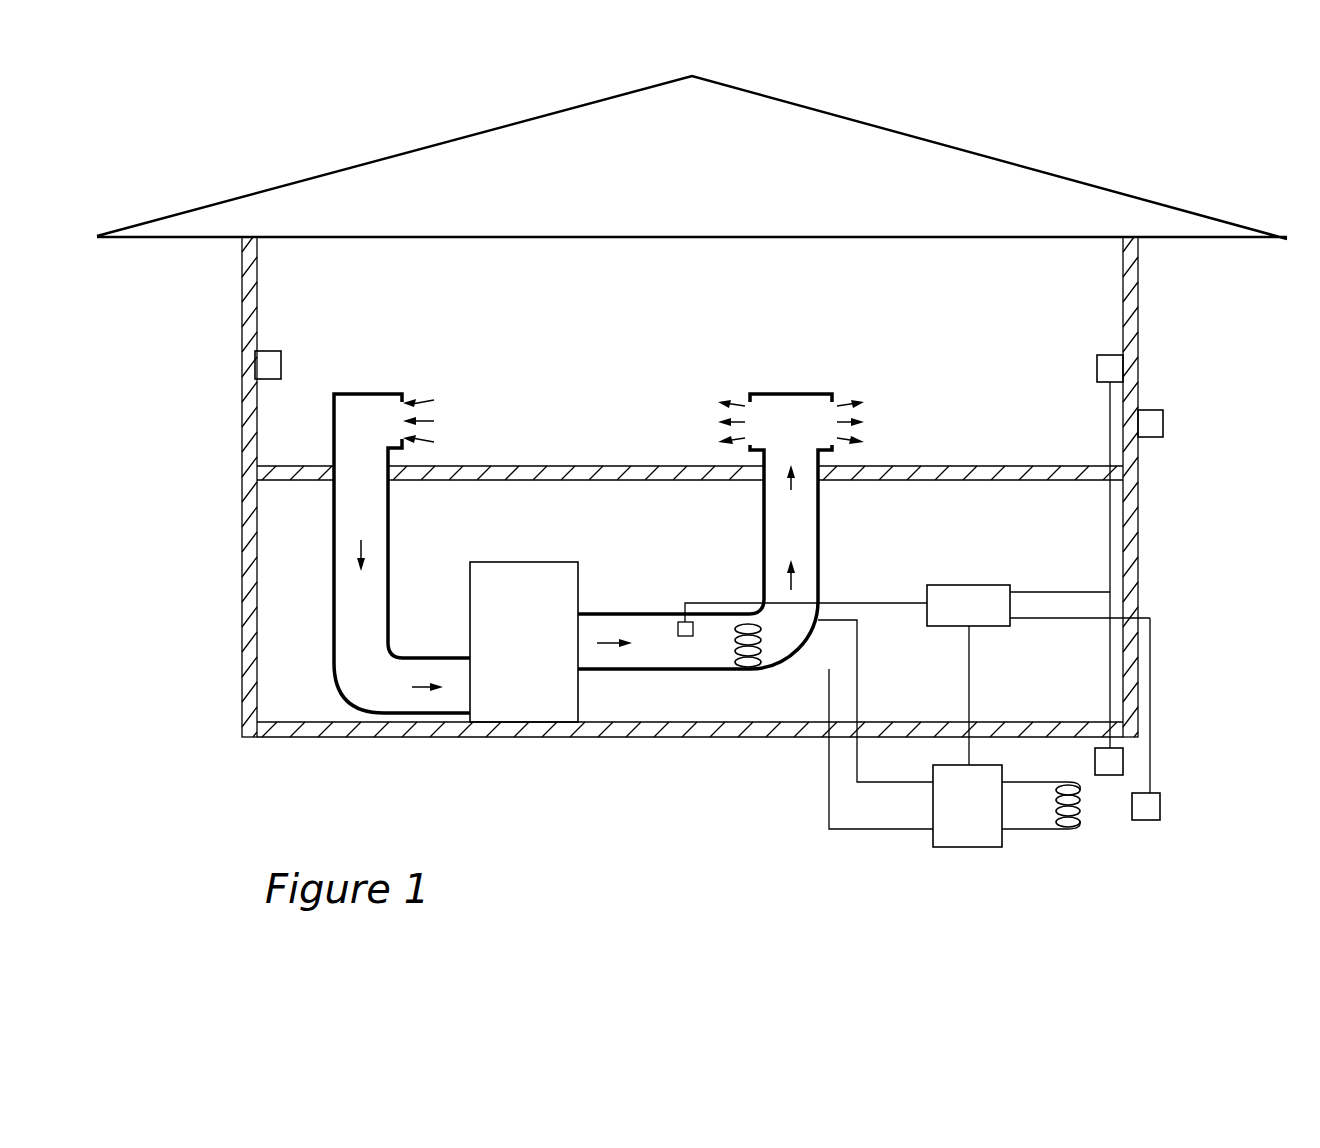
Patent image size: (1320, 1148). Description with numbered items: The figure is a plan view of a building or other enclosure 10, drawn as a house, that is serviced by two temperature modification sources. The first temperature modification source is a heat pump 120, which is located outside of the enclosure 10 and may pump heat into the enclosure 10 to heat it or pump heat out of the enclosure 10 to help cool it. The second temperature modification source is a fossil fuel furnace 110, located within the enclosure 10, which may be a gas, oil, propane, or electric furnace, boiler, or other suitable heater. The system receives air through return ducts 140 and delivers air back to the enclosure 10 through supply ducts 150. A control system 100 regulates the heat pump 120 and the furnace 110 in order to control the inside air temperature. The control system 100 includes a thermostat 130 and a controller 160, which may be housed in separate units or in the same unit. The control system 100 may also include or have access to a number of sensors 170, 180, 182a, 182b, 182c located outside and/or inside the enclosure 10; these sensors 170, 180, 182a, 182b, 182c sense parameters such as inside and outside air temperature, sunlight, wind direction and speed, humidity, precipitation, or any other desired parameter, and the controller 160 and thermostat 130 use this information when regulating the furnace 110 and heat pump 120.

The enclosure 10 is at (388, 157).
The control system 100 is at (585, 412).
The fossil fuel furnace 110 is at (502, 700).
The heat pump 120 is at (937, 857).
The thermostat 130 is at (1097, 367).
The return ducts 140 is at (334, 589).
The supply ducts 150 is at (668, 670).
The controller 160 is at (968, 585).
The sensor 170 is at (1163, 425).
The sensor 180 is at (275, 357).
The sensor 182a is at (1123, 762).
The sensor 182b is at (1160, 808).
The sensor 182c is at (684, 618).